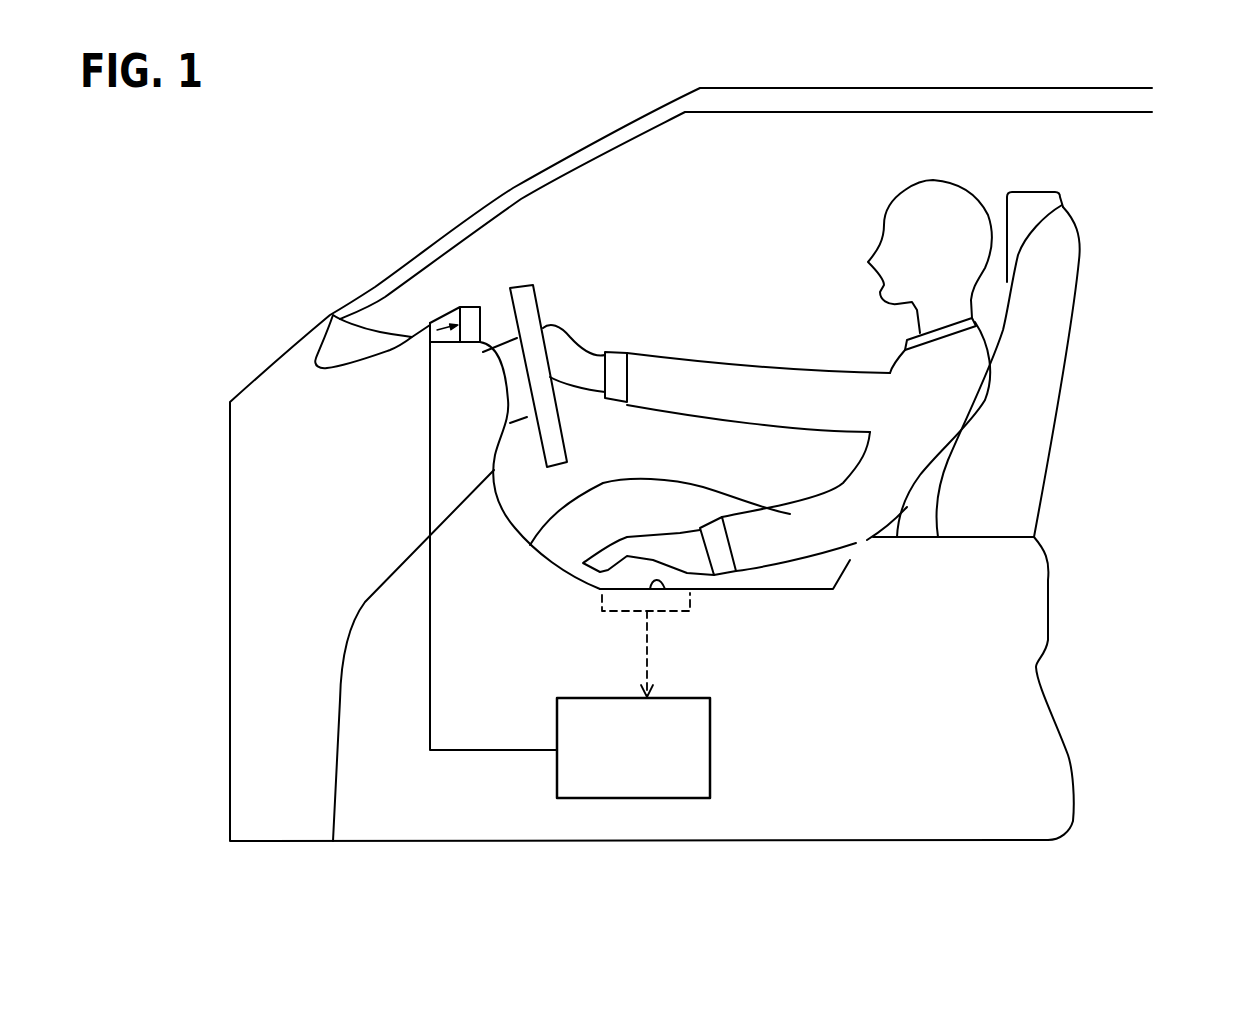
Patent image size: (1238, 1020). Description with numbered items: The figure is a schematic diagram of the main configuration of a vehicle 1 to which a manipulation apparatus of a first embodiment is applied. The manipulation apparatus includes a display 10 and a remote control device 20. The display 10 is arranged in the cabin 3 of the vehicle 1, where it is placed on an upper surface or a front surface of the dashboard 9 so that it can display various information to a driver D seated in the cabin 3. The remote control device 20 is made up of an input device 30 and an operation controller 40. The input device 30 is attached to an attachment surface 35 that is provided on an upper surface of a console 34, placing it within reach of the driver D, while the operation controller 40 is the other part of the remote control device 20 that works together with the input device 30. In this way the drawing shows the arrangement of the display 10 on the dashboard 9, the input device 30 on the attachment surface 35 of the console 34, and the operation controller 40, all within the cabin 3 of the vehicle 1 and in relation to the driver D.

The vehicle 1 is at (420, 142).
The cabin 3 is at (527, 221).
The dashboard 9 is at (415, 347).
The display 10 is at (430, 284).
The remote control device 20 is at (722, 690).
The input device 30 is at (600, 603).
The console 34 is at (907, 652).
The attachment surface 35 is at (662, 586).
The operation controller 40 is at (557, 700).
The driver D is at (940, 178).